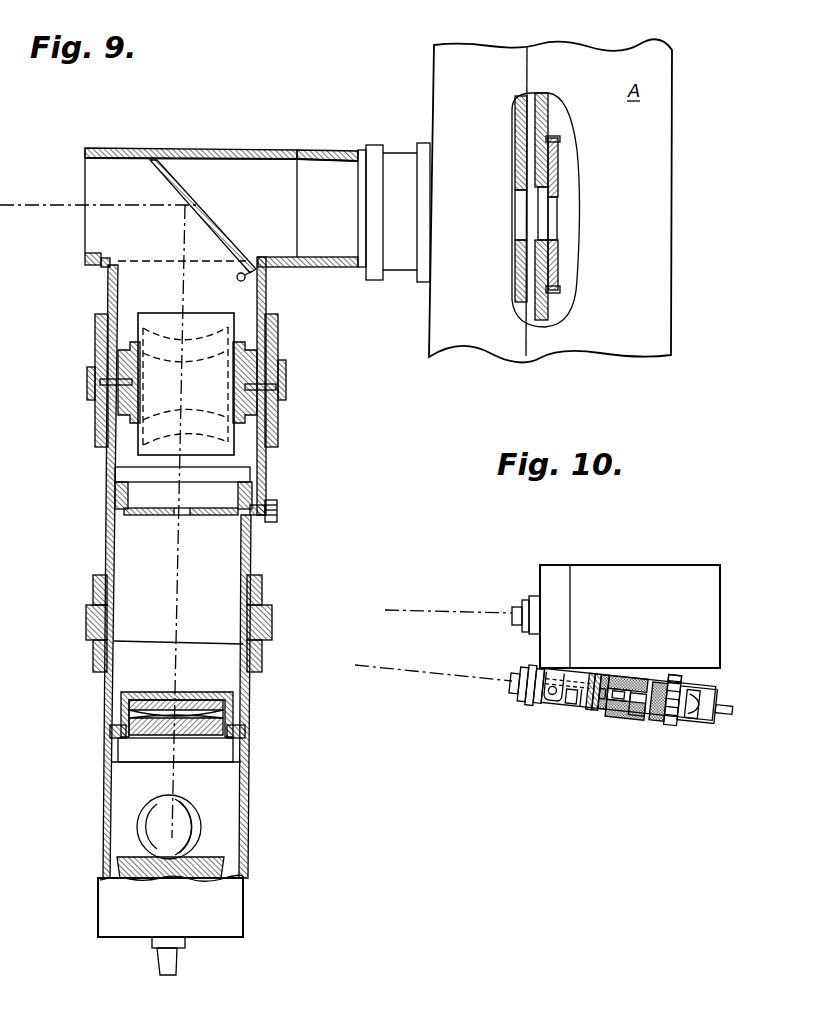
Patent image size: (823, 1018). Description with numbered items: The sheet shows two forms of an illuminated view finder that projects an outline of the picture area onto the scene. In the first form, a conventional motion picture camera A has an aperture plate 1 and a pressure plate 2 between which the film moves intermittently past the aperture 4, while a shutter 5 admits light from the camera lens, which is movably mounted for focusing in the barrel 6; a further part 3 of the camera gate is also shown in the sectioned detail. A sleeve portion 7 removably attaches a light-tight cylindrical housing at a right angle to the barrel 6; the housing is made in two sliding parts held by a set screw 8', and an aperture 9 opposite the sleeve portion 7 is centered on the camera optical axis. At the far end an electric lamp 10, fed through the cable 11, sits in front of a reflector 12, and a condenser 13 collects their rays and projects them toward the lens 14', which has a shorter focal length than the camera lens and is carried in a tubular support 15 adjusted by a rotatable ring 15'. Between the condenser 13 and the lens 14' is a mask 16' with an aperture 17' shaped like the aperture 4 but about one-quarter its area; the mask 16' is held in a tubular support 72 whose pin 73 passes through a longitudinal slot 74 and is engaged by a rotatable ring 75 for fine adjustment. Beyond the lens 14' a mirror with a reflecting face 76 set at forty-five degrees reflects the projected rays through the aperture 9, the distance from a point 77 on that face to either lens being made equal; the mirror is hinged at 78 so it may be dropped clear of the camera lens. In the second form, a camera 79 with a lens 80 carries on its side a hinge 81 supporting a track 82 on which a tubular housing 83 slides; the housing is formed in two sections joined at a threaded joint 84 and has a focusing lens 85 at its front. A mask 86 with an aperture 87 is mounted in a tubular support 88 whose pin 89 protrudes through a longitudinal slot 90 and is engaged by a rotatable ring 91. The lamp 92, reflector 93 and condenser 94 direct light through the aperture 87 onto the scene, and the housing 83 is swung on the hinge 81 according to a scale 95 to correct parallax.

In FIG. 9, the aperture plate 1 is at (550, 125).
In FIG. 9, the pressure plate 2 is at (560, 170).
In FIG. 9, the lower sleeve 3 is at (548, 312).
In FIG. 9, the aperture 4 is at (550, 222).
In FIG. 9, the shutter 5 is at (516, 135).
In FIG. 9, the barrel 6 is at (362, 156).
In FIG. 9, the sleeve portion 7 is at (312, 157).
In FIG. 9, the aperture 9 is at (100, 172).
In FIG. 9, the reflecting face 76 is at (160, 178).
In FIG. 9, the point 77 is at (187, 212).
In FIG. 9, the hinge 78 is at (268, 298).
In FIG. 9, the tubular support 15 is at (209, 380).
In FIG. 9, the rotatable ring 15' is at (212, 380).
In FIG. 9, the lens 14' is at (223, 384).
In FIG. 9, the set screw 8' is at (215, 494).
In FIG. 9, the tubular support 72 is at (114, 553).
In FIG. 9, the aperture 17' is at (181, 537).
In FIG. 9, the mask 16' is at (207, 521).
In FIG. 9, the longitudinal slot 74 is at (95, 605).
In FIG. 9, the pin 73 is at (90, 635).
In FIG. 9, the rotatable ring 75 is at (95, 652).
In FIG. 9, the condenser 13 is at (225, 718).
In FIG. 9, the electric lamp 10 is at (208, 840).
In FIG. 9, the reflector 12 is at (225, 877).
In FIG. 9, the cable 11 is at (178, 960).
In FIG. 10, the motion picture camera 79 is at (630, 572).
In FIG. 10, the lens 80 is at (515, 605).
In FIG. 10, the hinge 81 is at (551, 693).
In FIG. 10, the track 82 is at (571, 697).
In FIG. 10, the tubular housing 83 is at (592, 712).
In FIG. 10, the threaded joint 84 is at (602, 714).
In FIG. 10, the lens 85 is at (515, 692).
In FIG. 10, the mask 86 is at (605, 682).
In FIG. 10, the aperture 87 is at (597, 686).
In FIG. 10, the tubular support 88 is at (635, 682).
In FIG. 10, the pin 89 is at (622, 720).
In FIG. 10, the longitudinal slot 90 is at (643, 718).
In FIG. 10, the rotatable ring 91 is at (627, 694).
In FIG. 10, the lamp 92 is at (677, 722).
In FIG. 10, the reflector 93 is at (710, 722).
In FIG. 10, the condenser 94 is at (660, 697).
In FIG. 10, the scale 95 is at (678, 672).